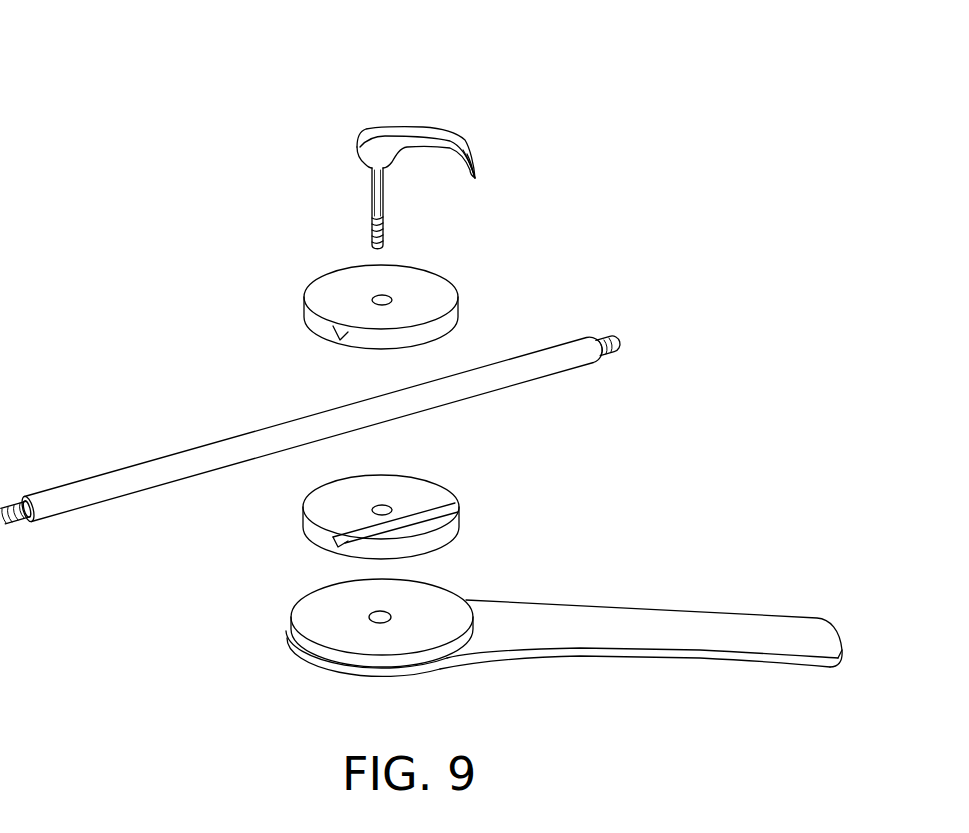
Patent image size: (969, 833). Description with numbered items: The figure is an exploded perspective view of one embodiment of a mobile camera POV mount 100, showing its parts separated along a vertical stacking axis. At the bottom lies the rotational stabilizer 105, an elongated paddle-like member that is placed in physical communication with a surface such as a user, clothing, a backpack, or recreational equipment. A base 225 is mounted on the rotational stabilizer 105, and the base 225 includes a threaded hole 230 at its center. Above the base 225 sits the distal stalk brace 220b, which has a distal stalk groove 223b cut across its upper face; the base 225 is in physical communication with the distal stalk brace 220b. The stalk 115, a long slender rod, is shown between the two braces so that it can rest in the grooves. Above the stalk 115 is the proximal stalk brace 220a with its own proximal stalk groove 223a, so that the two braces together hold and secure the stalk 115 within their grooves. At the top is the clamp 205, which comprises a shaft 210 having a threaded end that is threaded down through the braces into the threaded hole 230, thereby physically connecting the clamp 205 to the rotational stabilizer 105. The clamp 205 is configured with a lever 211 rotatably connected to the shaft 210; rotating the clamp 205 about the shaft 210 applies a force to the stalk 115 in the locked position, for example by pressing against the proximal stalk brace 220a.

The mobile camera POV mount 100 is at (90, 59).
The rotational stabilizer 105 is at (647, 608).
The stalk 115 is at (267, 420).
The clamp 205 is at (368, 128).
The shaft 210 is at (372, 205).
The lever 211 is at (445, 130).
The proximal stalk brace 220a is at (324, 277).
The distal stalk brace 220b is at (433, 487).
The proximal stalk groove 223a is at (340, 331).
The distal stalk groove 223b is at (333, 537).
The base 225 is at (318, 590).
The threaded hole 230 is at (370, 618).